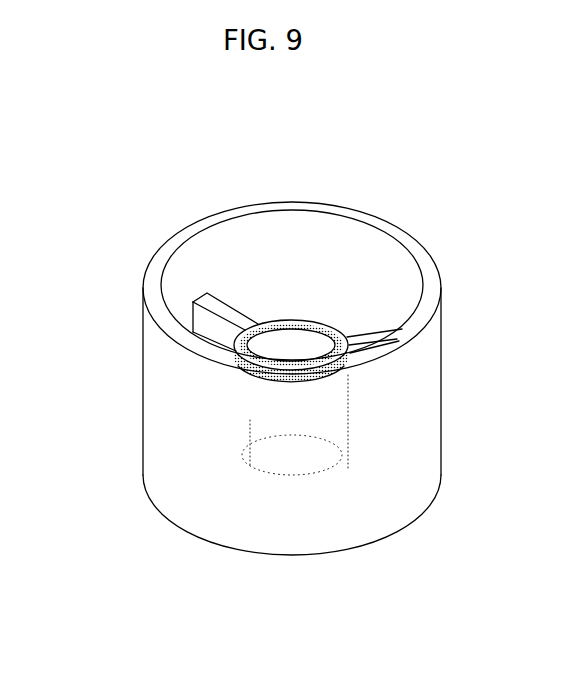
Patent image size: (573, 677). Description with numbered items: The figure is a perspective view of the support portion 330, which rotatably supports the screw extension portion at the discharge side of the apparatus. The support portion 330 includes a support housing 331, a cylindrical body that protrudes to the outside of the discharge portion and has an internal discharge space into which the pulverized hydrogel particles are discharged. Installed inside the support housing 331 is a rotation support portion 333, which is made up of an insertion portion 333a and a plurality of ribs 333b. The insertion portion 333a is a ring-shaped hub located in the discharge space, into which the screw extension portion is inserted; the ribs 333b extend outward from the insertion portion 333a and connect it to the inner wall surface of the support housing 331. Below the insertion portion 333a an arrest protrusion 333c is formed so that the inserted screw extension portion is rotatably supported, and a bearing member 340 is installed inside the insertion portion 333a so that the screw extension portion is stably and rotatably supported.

The support portion 330 is at (269, 384).
The support housing 331 is at (441, 403).
The rotation support portion 333 is at (232, 307).
The insertion portion 333a is at (237, 368).
The ribs 333b is at (225, 320).
The arrest protrusion 333c is at (307, 475).
The bearing member 340 is at (291, 322).